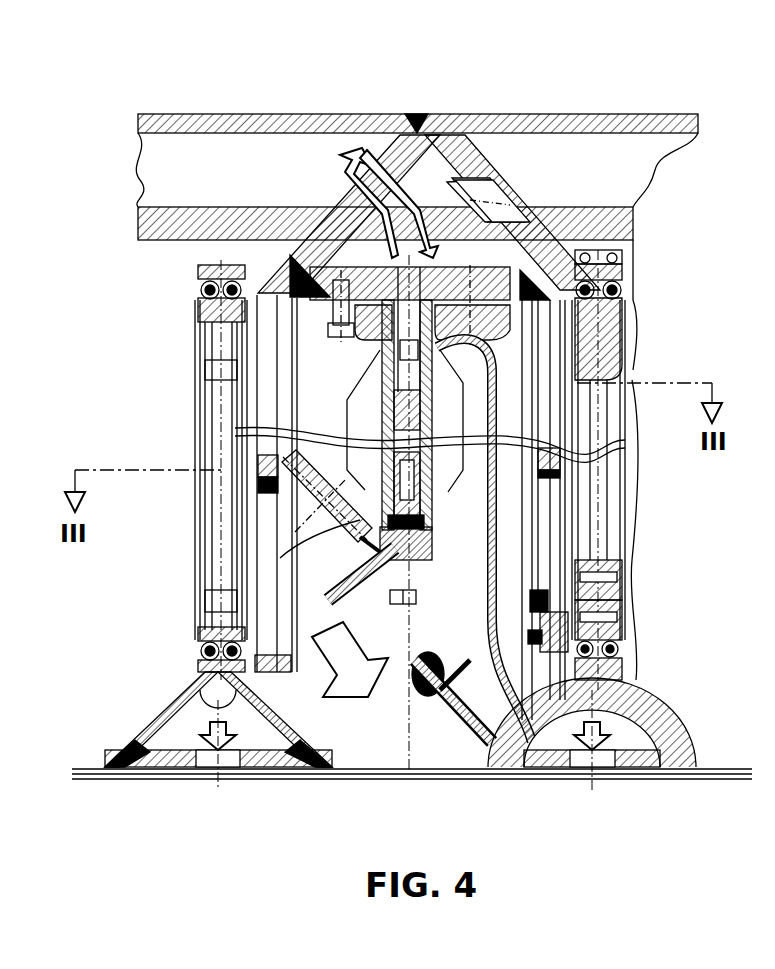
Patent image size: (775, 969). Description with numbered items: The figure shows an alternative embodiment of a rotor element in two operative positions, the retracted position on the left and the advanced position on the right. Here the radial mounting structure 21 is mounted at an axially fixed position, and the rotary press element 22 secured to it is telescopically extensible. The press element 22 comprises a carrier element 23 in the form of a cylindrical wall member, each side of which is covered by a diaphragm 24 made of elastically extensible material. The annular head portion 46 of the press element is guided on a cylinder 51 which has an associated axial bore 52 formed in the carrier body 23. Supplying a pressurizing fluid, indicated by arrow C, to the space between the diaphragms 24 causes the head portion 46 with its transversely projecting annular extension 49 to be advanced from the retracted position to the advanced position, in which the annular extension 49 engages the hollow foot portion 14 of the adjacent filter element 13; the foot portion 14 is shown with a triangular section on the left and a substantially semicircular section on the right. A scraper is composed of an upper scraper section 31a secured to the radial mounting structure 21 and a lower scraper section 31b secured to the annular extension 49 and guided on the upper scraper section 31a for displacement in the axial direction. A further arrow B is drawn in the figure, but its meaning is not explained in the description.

The radial mounting structure 21 is at (250, 114).
The pressurizing fluid supply arrow C is at (376, 155).
The diaphragm 24 is at (497, 523).
The axial bore 52 is at (345, 450).
The carrier element 23 is at (600, 445).
The upper scraper section 31a is at (270, 320).
The rotary press element 22 is at (336, 376).
The lower scraper section 31b is at (300, 552).
The head portion 46 is at (405, 553).
The cylinder 51 is at (415, 599).
The annular extension 49 is at (352, 587).
The filter element 13 is at (650, 356).
The foot portion 14 is at (172, 695).
The direction arrow B is at (348, 673).